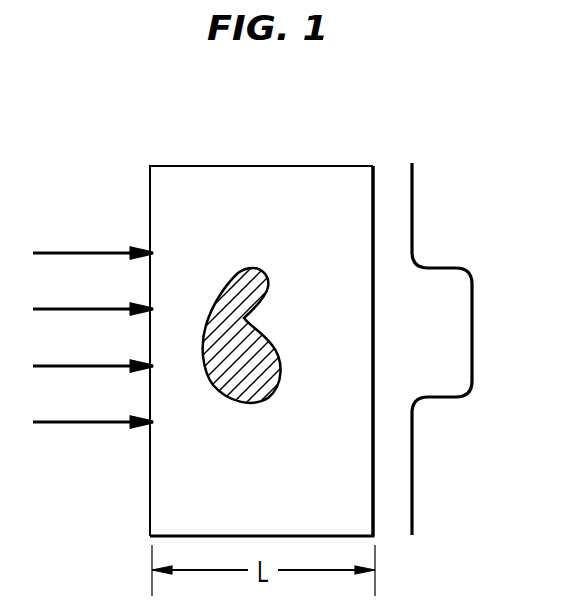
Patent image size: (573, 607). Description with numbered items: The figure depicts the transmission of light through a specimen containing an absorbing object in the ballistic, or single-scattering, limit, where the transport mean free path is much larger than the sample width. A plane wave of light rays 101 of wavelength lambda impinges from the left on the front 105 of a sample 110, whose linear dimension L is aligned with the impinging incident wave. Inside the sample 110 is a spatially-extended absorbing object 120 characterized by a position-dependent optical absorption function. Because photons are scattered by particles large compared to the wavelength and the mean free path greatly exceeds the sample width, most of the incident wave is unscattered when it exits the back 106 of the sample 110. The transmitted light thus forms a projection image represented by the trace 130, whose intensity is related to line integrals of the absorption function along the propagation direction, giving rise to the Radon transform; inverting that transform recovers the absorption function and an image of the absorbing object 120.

The light rays 101 is at (88, 196).
The front of sample 105 is at (149, 190).
The back of sample 106 is at (376, 186).
The sample 110 is at (215, 167).
The absorbing object 120 is at (268, 282).
The trace 130 is at (438, 263).